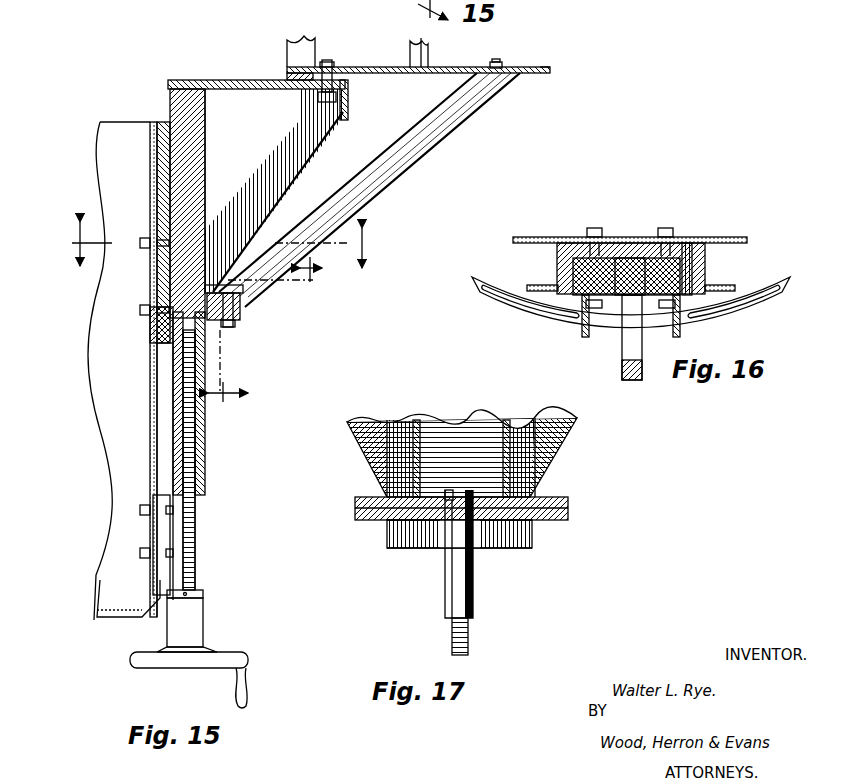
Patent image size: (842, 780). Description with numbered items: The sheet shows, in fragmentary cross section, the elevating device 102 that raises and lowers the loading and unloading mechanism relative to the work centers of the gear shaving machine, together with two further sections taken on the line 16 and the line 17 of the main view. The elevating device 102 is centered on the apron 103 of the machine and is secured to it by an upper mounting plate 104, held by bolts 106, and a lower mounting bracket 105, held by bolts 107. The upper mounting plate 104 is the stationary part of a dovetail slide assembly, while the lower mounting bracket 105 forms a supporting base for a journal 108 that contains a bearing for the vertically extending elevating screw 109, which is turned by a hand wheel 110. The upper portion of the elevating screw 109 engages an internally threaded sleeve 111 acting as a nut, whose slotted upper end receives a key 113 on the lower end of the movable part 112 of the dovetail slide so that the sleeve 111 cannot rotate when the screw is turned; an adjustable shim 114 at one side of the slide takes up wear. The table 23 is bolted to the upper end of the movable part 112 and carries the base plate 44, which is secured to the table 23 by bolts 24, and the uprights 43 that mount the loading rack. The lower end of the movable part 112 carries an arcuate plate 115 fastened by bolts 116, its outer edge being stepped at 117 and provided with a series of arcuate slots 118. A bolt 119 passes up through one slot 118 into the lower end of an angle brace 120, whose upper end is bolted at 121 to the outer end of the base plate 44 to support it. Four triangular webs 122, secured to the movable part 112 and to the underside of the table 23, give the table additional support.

In FIG. 15, the table 23 is at (228, 80).
In FIG. 15, the bolts 24 is at (332, 60).
In FIG. 15, the uprights 43 is at (305, 46).
In FIG. 15, the base plate 44 is at (545, 67).
In FIG. 15, the elevating device 102 is at (336, 148).
In FIG. 15, the apron 103 is at (150, 400).
In FIG. 16, the apron 103 is at (562, 237).
In FIG. 15, the upper mounting plate 104 is at (150, 225).
In FIG. 16, the upper mounting plate 104 is at (648, 243).
In FIG. 17, the upper mounting plate 104 is at (528, 532).
In FIG. 15, the lower mounting bracket 105 is at (150, 592).
In FIG. 15, the bolts 106 is at (140, 247).
In FIG. 15, the bolts 107 is at (142, 518).
In FIG. 15, the journal 108 is at (198, 612).
In FIG. 15, the elevating screw 109 is at (198, 526).
In FIG. 17, the elevating screw 109 is at (468, 640).
In FIG. 15, the hand wheel 110 is at (245, 658).
In FIG. 15, the internally threaded sleeve 111 is at (205, 448).
In FIG. 17, the internally threaded sleeve 111 is at (473, 582).
In FIG. 15, the movable part of the dovetail slide 112 is at (200, 145).
In FIG. 16, the movable part of the dovetail slide 112 is at (575, 268).
In FIG. 17, the movable part of the dovetail slide 112 is at (520, 460).
In FIG. 17, the key 113 is at (455, 535).
In FIG. 16, the adjustable shim 114 is at (687, 243).
In FIG. 16, the arcuate plate 115 is at (756, 278).
In FIG. 16, the bolts 116 is at (600, 328).
In FIG. 15, the stepped outer edge 117 is at (240, 308).
In FIG. 16, the arcuate slots 118 is at (538, 312).
In FIG. 15, the bolt 119 is at (232, 328).
In FIG. 15, the angle brace 120 is at (392, 160).
In FIG. 16, the angle brace 120 is at (622, 362).
In FIG. 15, the bolt 121 is at (500, 62).
In FIG. 15, the triangular webs 122 is at (292, 178).
In FIG. 16, the triangular webs 122 is at (716, 285).
In FIG. 17, the triangular webs 122 is at (495, 428).
In FIG. 15, the section line 16— 16 is at (232, 228).
In FIG. 15, the section line 17— 17 is at (276, 341).